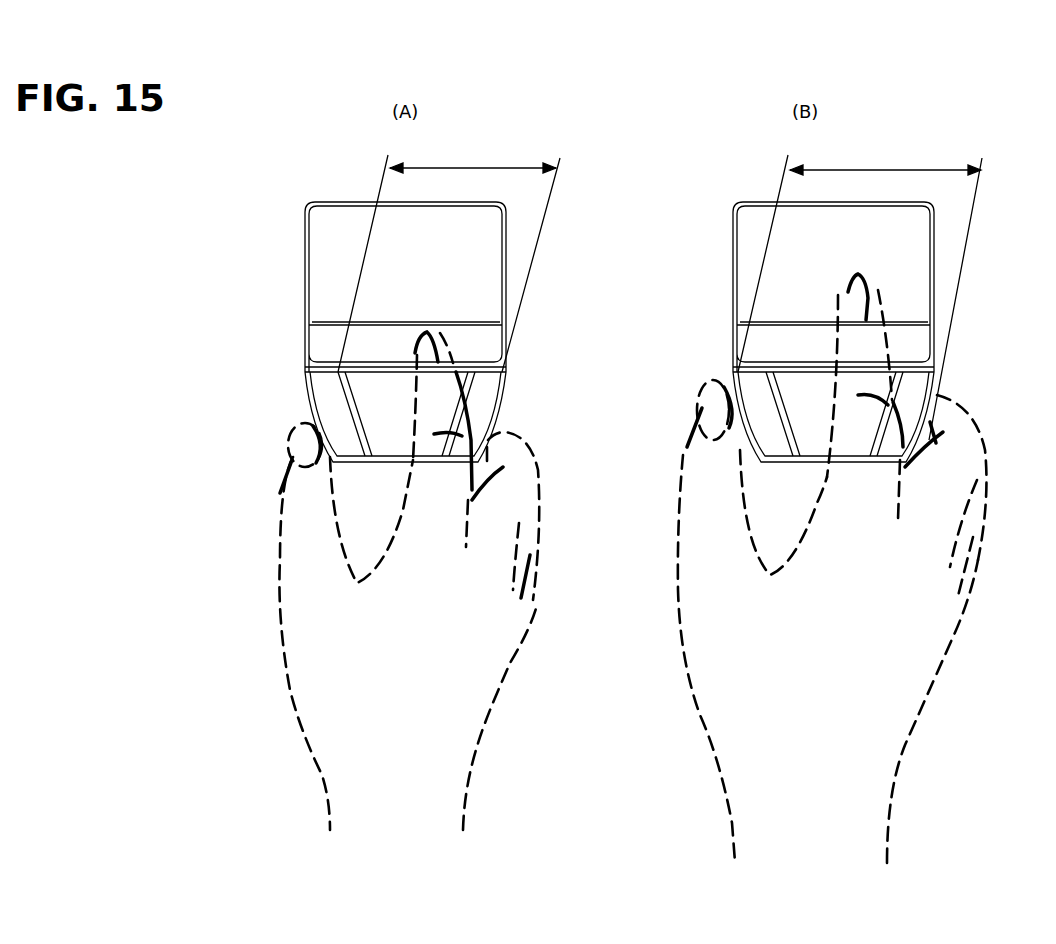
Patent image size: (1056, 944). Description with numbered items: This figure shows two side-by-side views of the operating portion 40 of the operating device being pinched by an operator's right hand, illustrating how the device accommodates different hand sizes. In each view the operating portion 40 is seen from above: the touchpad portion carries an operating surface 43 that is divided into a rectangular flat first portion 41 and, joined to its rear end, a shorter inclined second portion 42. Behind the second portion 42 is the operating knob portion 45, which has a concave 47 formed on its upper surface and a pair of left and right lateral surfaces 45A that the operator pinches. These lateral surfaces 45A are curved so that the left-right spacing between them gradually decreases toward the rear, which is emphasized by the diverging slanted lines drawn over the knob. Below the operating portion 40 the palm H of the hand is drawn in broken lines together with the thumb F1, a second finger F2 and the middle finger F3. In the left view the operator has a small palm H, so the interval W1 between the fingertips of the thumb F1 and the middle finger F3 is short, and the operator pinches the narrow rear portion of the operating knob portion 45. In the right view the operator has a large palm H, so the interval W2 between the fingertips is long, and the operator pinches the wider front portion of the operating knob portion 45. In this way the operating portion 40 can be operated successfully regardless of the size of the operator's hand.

The operating portion 40 is at (308, 198).
The first portion 41 is at (332, 271).
The second portion 42 is at (332, 340).
The operating surface 43 is at (232, 257).
The operating knob portion 45 is at (493, 392).
The lateral surfaces 45A is at (312, 392).
The concave 47 is at (376, 388).
The short interval W1 is at (473, 159).
The long interval W2 is at (885, 160).
The thumb F1 is at (289, 445).
The index finger F2 is at (437, 325).
The middle finger F3 is at (535, 462).
The palm H is at (478, 700).